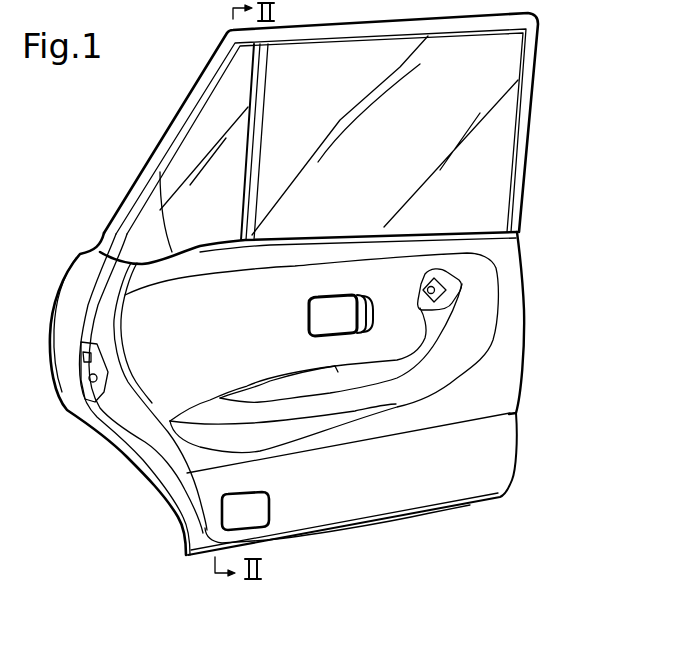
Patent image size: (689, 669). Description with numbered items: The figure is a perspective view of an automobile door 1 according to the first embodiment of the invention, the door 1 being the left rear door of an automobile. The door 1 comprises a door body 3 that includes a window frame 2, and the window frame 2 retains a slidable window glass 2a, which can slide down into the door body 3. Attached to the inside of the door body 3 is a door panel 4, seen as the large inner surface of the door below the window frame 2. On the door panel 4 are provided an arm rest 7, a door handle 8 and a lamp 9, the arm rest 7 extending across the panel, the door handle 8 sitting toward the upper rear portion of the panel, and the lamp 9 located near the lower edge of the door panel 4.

The automobile door 1 is at (540, 243).
The window frame 2 is at (158, 148).
The window glass 2a is at (223, 97).
The door body 3 is at (78, 412).
The door panel 4 is at (478, 371).
The arm rest 7 is at (386, 392).
The door handle 8 is at (372, 316).
The lamp 9 is at (262, 505).